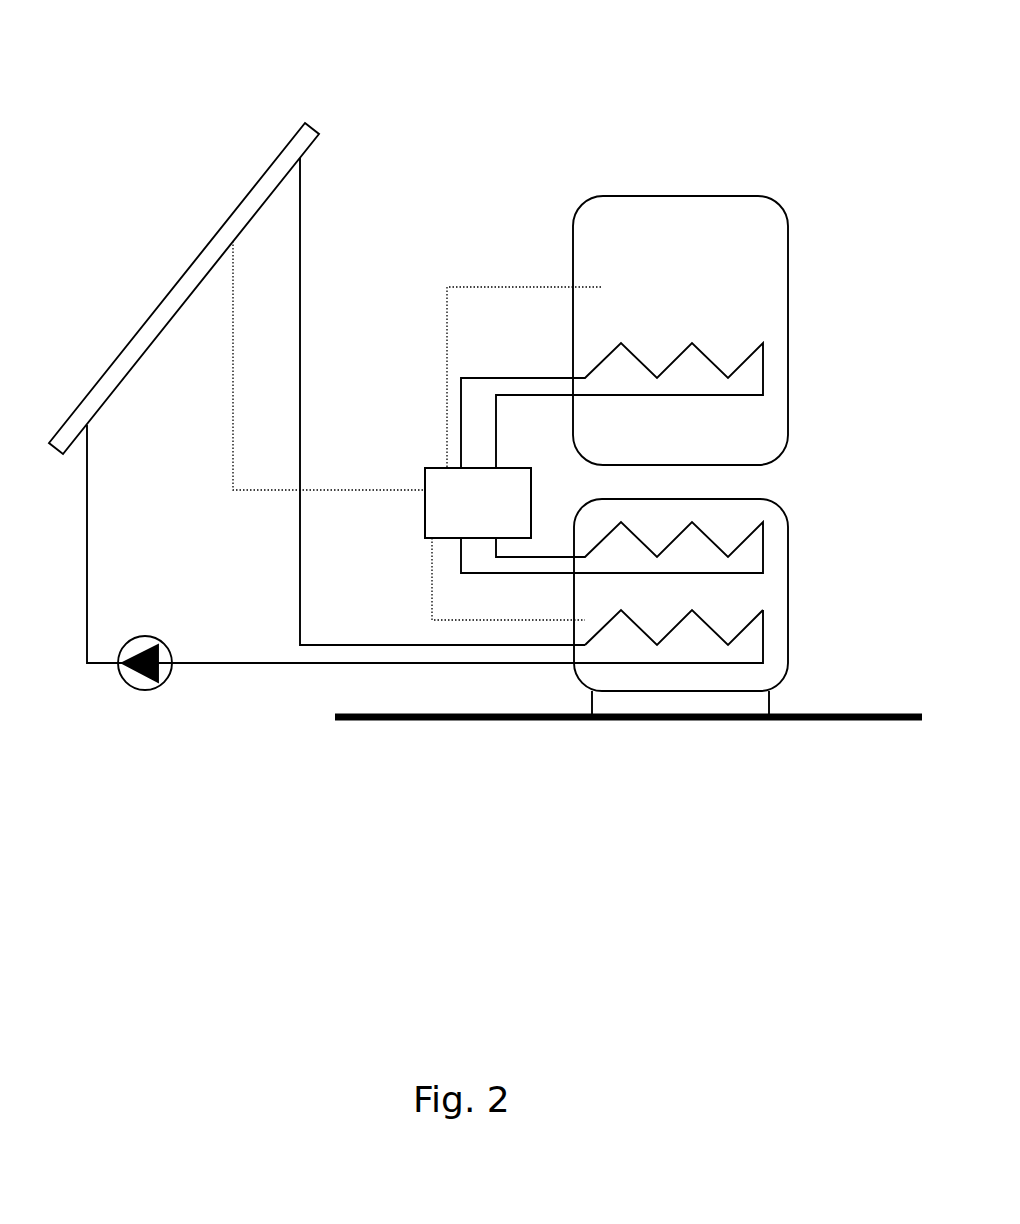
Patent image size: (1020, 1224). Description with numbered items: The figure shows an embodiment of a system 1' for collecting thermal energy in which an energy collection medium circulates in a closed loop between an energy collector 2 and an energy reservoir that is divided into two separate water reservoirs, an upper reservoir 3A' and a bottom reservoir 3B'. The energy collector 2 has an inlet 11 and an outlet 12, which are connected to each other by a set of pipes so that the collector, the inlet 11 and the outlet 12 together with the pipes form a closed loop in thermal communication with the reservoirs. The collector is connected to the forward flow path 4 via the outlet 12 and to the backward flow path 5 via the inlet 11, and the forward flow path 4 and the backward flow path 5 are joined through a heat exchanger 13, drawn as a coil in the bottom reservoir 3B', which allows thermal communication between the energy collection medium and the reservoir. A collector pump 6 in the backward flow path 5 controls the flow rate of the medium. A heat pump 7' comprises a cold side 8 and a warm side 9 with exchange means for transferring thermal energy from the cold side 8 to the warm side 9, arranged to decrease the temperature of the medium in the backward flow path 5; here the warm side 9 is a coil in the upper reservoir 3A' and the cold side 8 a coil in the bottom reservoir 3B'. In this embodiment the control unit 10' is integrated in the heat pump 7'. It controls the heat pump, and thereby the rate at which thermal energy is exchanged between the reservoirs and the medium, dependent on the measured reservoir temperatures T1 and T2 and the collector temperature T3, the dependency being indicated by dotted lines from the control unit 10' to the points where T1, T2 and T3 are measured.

The system for collection of thermal energy 1' is at (110, 50).
The energy collector 2 is at (132, 352).
The forward flow path 4 is at (300, 535).
The backward flow path 5 is at (87, 562).
The collector pump 6 is at (133, 680).
The heat pump 7' is at (417, 430).
The control unit 10' is at (456, 470).
The cold side 8 is at (763, 551).
The warm side 9 is at (763, 372).
The inlet 11 is at (88, 426).
The outlet 12 is at (302, 158).
The heat exchanger 13 is at (763, 636).
The upper reservoir 3A' is at (697, 305).
The bottom reservoir 3B' is at (691, 645).
The reservoir temperature T1 is at (586, 621).
The reservoir temperature T2 is at (601, 287).
The collector temperature T3 is at (233, 228).